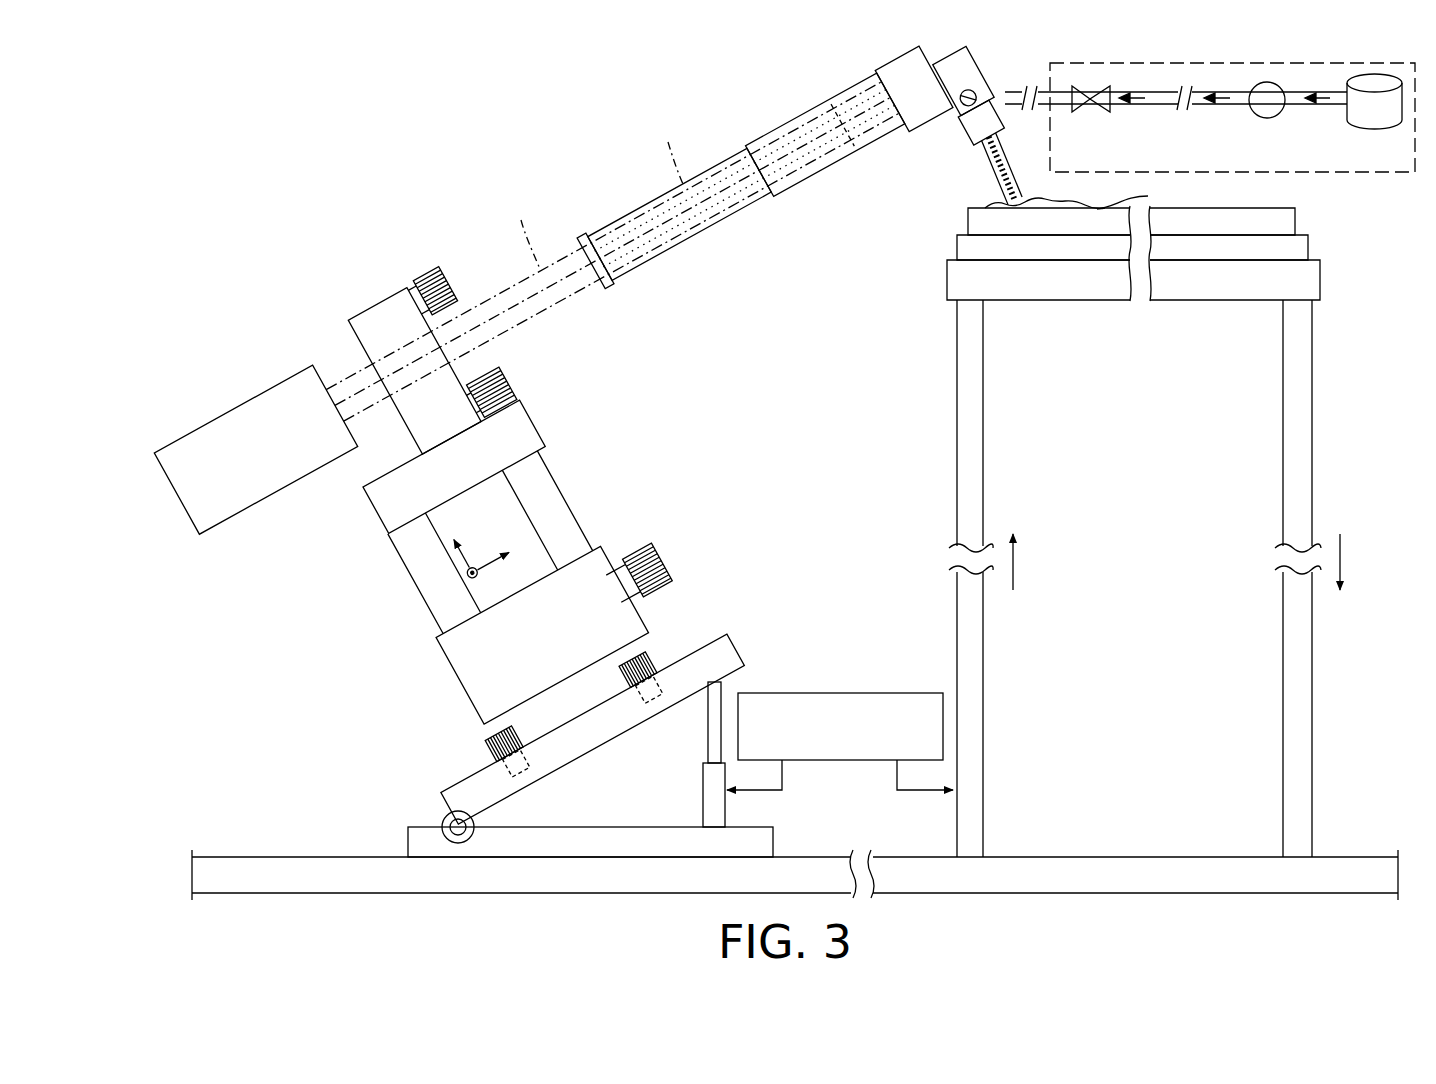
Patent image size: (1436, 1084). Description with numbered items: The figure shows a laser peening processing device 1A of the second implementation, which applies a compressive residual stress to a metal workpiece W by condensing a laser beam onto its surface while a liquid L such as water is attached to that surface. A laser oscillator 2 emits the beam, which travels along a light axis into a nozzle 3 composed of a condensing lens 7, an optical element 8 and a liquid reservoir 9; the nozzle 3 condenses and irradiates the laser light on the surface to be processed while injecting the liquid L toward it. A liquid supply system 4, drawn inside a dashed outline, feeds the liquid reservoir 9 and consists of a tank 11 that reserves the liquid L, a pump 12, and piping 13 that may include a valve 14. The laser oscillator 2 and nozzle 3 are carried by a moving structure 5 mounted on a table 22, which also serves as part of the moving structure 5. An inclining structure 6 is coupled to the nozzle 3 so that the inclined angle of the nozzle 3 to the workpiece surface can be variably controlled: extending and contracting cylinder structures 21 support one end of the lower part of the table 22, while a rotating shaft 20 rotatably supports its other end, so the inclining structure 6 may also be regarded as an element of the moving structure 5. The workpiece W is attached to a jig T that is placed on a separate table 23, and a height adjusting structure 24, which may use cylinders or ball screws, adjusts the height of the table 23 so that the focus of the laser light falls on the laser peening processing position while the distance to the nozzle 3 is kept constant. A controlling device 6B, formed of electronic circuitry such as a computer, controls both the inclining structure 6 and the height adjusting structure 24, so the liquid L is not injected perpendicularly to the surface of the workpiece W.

The laser peening processing device 1A is at (401, 158).
The laser oscillator 2 is at (285, 377).
The nozzle 3 is at (796, 117).
The liquid supply system 4 is at (1210, 155).
The moving structure 5 is at (369, 507).
The inclining structure 6 is at (702, 716).
The controlling device 6B is at (900, 692).
The condensing lens 7 is at (852, 132).
The optical element 8 is at (955, 60).
The liquid reservoir 9 is at (955, 122).
The tank 11 is at (1375, 125).
The pump 12 is at (1259, 120).
The piping 13 is at (1150, 108).
The valve 14 is at (1084, 112).
The rotating shaft 20 is at (443, 814).
The cylinder structures 21 is at (706, 746).
The table 22 is at (736, 648).
The table 23 is at (1089, 266).
The height adjusting structure 24 is at (956, 360).
The liquid L is at (1005, 202).
The workpiece W is at (966, 222).
The jig T is at (956, 248).